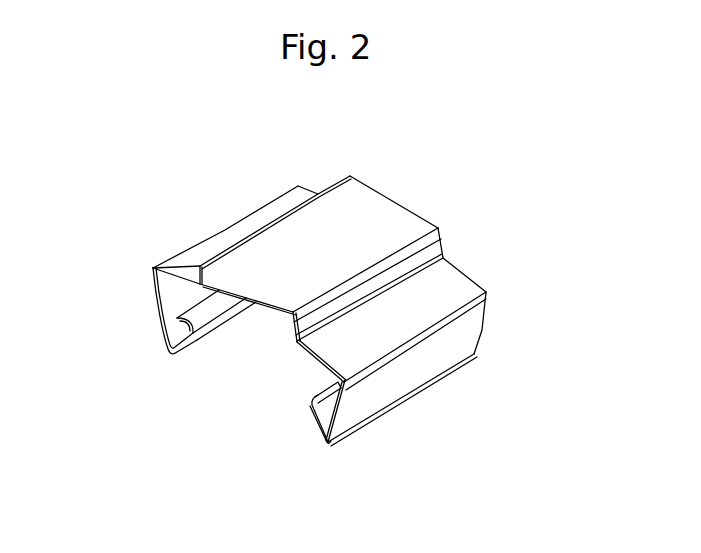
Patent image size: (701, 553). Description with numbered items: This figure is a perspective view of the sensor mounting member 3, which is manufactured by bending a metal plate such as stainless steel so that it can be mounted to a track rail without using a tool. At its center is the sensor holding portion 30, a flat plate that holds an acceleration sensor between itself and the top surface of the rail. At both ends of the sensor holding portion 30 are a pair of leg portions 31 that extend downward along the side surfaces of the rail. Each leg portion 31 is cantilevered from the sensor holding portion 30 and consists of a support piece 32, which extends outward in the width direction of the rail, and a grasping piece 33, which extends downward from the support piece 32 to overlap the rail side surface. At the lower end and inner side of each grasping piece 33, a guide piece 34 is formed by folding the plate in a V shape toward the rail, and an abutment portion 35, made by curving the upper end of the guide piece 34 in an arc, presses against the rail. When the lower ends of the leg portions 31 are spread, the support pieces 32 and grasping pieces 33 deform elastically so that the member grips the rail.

The sensor mounting member 3 is at (395, 189).
The sensor holding portion 30 is at (297, 238).
The leg portion 31 is at (141, 274).
The support piece 32 is at (232, 231).
The grasping piece 33 is at (152, 305).
The guide piece 34 is at (198, 340).
The abutment portion 35 is at (221, 310).